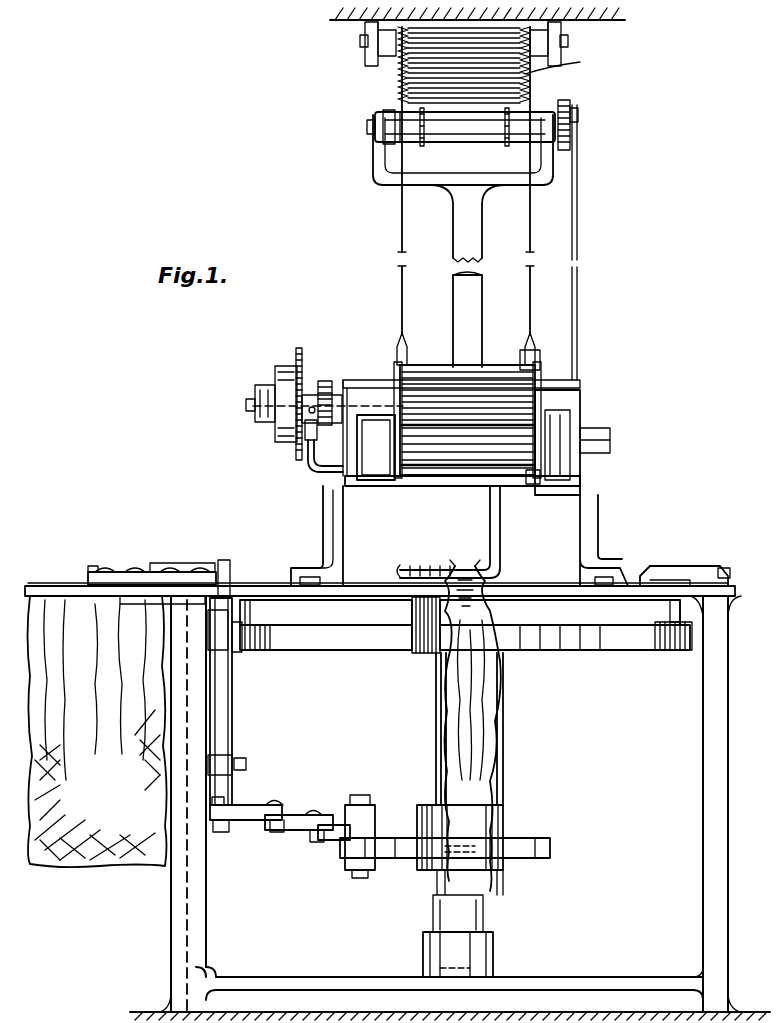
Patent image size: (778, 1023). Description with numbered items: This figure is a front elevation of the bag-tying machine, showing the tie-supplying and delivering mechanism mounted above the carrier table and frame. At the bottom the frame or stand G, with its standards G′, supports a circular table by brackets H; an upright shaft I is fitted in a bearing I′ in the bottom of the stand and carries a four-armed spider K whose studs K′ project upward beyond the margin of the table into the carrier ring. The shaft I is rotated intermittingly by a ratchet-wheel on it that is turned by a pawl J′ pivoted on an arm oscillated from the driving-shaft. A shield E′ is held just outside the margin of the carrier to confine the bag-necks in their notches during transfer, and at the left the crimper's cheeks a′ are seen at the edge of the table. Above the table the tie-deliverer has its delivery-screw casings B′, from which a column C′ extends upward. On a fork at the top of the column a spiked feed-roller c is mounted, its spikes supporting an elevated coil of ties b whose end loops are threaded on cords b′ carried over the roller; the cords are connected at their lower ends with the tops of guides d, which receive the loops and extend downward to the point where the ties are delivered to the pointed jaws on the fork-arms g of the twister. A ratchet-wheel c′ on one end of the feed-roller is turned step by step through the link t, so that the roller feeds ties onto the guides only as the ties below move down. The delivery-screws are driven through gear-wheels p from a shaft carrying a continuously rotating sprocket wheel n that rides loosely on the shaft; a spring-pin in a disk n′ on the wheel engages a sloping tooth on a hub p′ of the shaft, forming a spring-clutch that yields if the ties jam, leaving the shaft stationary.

The ties b is at (396, 70).
The cords b′ is at (530, 293).
The feed-roller c is at (463, 136).
The ratchet-wheel c′ is at (570, 101).
The link t is at (578, 226).
The column C′ is at (478, 242).
The guides d is at (394, 341).
The casings B′ is at (375, 447).
The fork-arms g is at (488, 482).
The gear-wheels p is at (247, 407).
The hub p′ is at (258, 425).
The sprocket wheel n is at (295, 352).
The disk n′ is at (290, 444).
The brackets H is at (680, 565).
The frame or stand G is at (712, 596).
The standards G′ is at (704, 712).
The cheeks a′ is at (111, 598).
The four-armed spider K is at (336, 644).
The studs K′ is at (676, 622).
The shield E′ is at (274, 650).
The upright shaft I is at (437, 697).
The bearing I′ is at (493, 940).
The pawl J′ is at (365, 858).